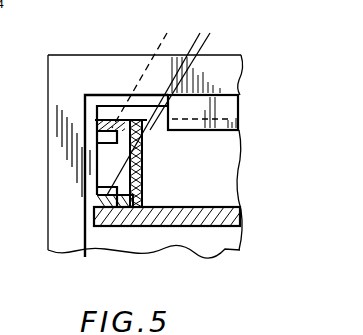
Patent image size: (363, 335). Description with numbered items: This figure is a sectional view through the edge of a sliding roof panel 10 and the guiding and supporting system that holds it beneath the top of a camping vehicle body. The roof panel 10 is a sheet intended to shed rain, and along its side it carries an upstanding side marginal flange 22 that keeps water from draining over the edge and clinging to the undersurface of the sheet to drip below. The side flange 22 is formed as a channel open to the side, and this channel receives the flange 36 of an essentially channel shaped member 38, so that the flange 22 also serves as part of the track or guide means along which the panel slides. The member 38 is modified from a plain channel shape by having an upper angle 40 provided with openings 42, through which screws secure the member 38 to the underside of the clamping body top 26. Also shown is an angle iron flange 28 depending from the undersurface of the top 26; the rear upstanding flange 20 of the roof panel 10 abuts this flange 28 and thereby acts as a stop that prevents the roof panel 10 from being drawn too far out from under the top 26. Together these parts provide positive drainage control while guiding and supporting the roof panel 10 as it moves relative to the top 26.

The roof panel 10 is at (173, 227).
The rear upstanding marginal flange 20 is at (202, 191).
The side upstanding marginal flange 22 is at (143, 162).
The clamping body top 26 is at (208, 55).
The angle iron flange 28 is at (223, 108).
The flange 36 is at (159, 106).
The channel shaped member 38 is at (90, 168).
The upper angle 40 is at (96, 95).
The opening 42 is at (144, 73).